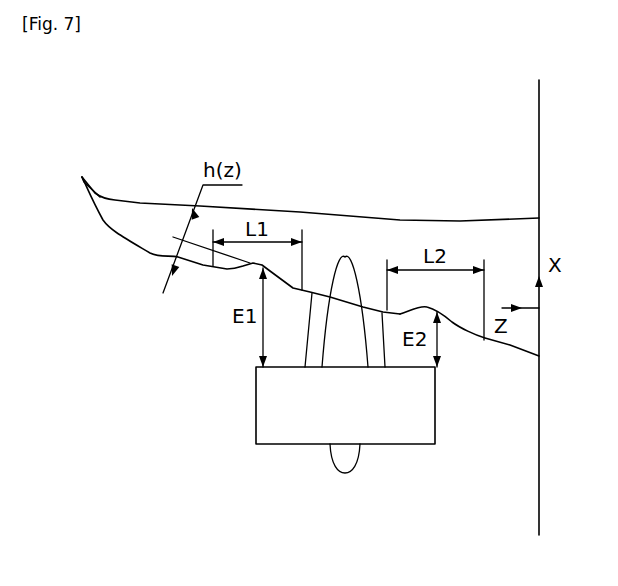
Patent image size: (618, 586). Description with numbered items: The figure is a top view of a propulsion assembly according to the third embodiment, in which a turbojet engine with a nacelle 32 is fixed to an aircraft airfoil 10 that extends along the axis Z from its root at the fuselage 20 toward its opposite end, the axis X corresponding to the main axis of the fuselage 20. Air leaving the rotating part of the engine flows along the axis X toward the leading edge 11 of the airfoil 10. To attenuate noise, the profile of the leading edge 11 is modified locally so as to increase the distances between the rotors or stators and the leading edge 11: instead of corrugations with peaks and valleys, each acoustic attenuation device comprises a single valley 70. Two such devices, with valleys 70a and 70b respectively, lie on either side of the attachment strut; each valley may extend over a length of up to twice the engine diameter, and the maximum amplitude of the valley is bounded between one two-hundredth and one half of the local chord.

The airfoil 10 is at (142, 217).
The leading edge 11 is at (125, 235).
The valley 70 is at (319, 338).
The valley 70a is at (222, 297).
The valley 70b is at (458, 348).
The nacelle 32 is at (267, 405).
The fuselage 20 is at (518, 498).